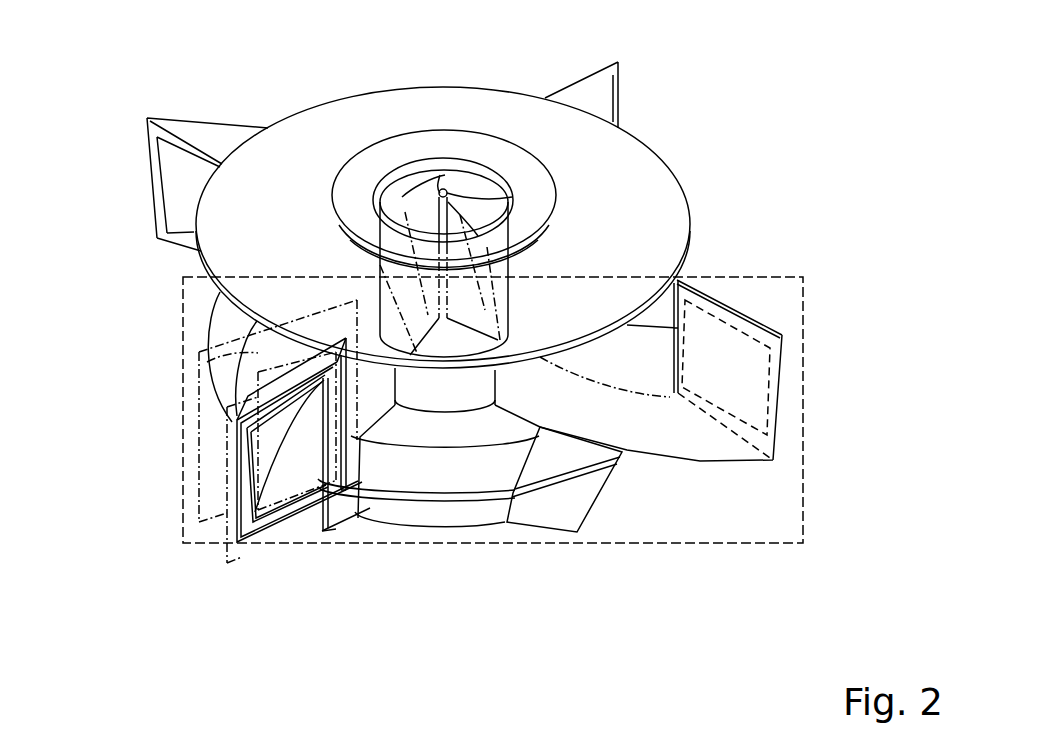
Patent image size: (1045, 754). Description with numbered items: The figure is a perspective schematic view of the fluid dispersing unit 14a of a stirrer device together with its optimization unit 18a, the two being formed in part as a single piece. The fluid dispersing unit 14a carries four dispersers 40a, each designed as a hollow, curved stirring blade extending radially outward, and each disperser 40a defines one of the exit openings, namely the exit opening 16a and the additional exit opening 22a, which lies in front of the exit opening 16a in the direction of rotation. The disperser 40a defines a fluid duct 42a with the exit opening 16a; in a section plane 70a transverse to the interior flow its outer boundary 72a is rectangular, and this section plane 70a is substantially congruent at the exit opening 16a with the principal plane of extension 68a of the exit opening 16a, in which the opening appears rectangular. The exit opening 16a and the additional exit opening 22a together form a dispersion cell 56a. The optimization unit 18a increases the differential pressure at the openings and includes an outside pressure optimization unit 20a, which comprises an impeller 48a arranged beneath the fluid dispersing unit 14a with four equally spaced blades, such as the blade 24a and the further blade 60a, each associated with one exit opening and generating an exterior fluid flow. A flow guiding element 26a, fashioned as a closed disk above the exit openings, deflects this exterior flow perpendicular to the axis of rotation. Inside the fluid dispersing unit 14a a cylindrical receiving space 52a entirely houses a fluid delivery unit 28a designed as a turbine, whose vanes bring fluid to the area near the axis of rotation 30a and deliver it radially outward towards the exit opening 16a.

The fluid dispersing unit 14a is at (167, 302).
The exit opening 16a is at (311, 450).
The optimization unit 18a is at (167, 343).
The outside pressure optimization unit 20a is at (503, 522).
The additional exit opening 22a is at (760, 311).
The blade 24a is at (560, 507).
The flow guiding element 26a is at (287, 205).
The fluid delivery unit 28a is at (515, 250).
The axis of rotation 30a is at (480, 166).
The disperser 40a is at (215, 358).
The fluid duct 42a is at (339, 482).
The impeller 48a is at (473, 513).
The receiving space 52a is at (520, 268).
The dispersion cell 56a is at (803, 507).
The further blade 60a is at (308, 478).
The principal plane of extension 68a is at (227, 562).
The section plane 70a is at (203, 513).
The outer boundary 72a is at (284, 522).